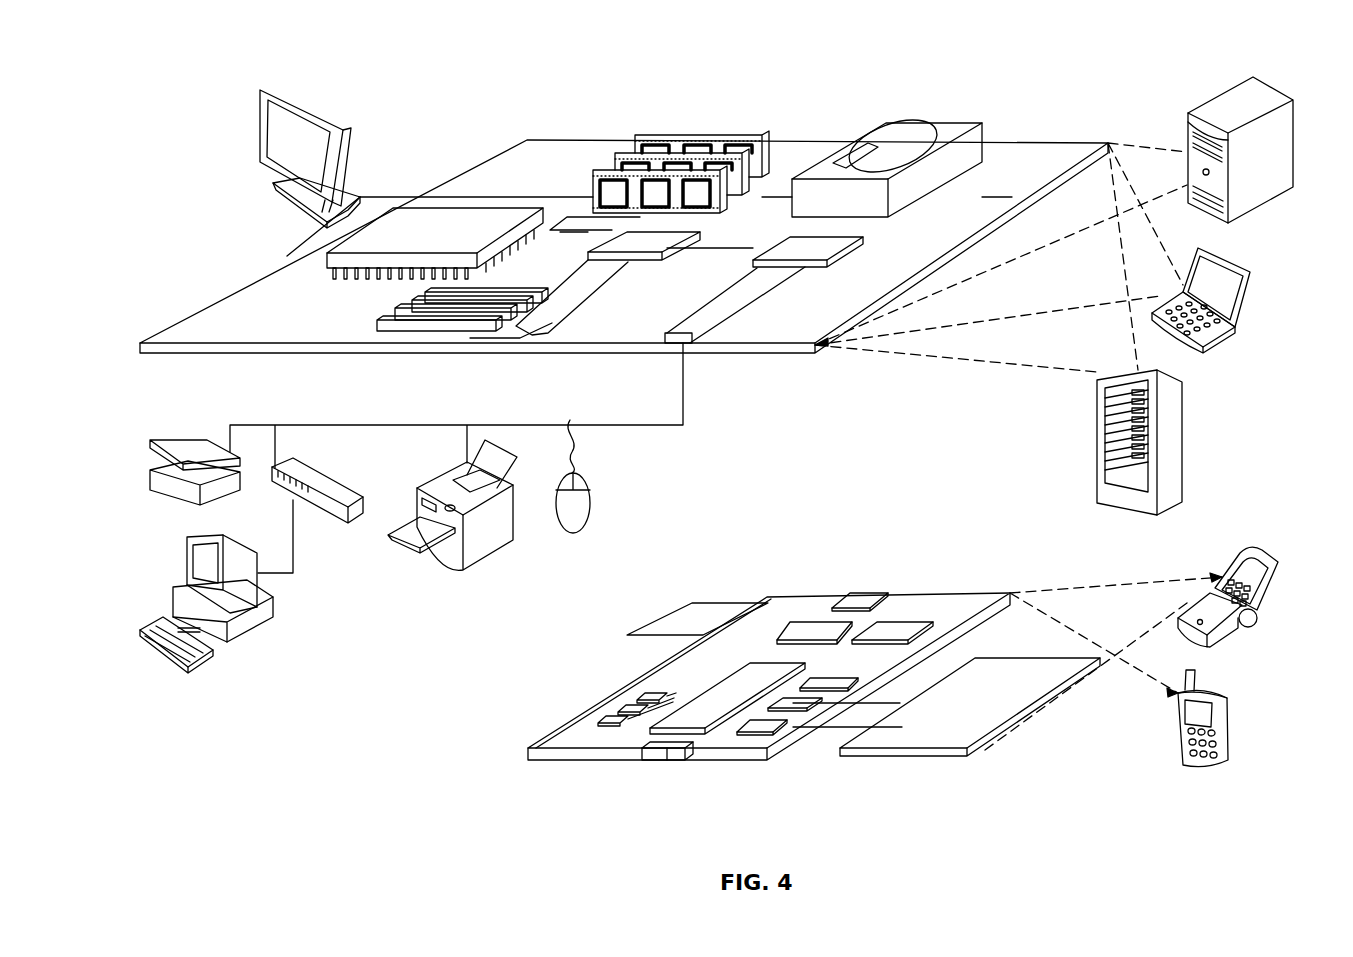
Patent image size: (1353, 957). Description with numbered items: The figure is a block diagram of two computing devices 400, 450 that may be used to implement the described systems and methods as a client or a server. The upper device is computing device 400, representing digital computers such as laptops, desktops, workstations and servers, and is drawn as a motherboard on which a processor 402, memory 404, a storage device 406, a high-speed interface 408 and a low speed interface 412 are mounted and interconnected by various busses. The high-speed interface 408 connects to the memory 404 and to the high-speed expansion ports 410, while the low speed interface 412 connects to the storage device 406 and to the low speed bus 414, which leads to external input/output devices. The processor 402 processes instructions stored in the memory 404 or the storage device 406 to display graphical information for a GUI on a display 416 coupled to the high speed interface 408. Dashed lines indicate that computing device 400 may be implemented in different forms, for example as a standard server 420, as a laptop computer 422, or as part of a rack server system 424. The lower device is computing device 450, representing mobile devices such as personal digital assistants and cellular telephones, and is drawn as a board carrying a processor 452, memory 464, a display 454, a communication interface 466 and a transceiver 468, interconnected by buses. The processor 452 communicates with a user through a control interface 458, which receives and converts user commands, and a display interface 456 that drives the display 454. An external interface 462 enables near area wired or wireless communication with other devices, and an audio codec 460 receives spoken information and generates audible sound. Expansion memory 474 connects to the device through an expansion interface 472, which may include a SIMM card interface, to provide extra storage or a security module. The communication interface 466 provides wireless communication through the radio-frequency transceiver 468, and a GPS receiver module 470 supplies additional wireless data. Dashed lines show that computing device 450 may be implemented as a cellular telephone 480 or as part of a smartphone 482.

The computing device 400 is at (446, 116).
The processor 402 is at (292, 258).
The memory 404 is at (650, 136).
The storage device 406 is at (878, 128).
The high-speed interface 408 is at (622, 244).
The high-speed expansion ports 410 is at (390, 318).
The low speed interface 412 is at (790, 246).
The low speed bus 414 is at (690, 345).
The display 416 is at (263, 93).
The standard server 420 is at (1188, 132).
The laptop computer 422 is at (1250, 274).
The rack server system 424 is at (1097, 465).
The computing device 450 is at (500, 760).
The processor 452 is at (703, 720).
The display 454 is at (940, 740).
The display interface 456 is at (782, 725).
The control interface 458 is at (812, 705).
The audio codec 460 is at (826, 690).
The external interface 462 is at (665, 750).
The memory 464 is at (612, 720).
The communication interface 466 is at (815, 630).
The transceiver 468 is at (893, 630).
The GPS receiver module 470 is at (866, 602).
The expansion interface 472 is at (748, 604).
The expansion memory 474 is at (675, 605).
The cellular telephone 480 is at (1242, 552).
The smartphone 482 is at (1178, 728).